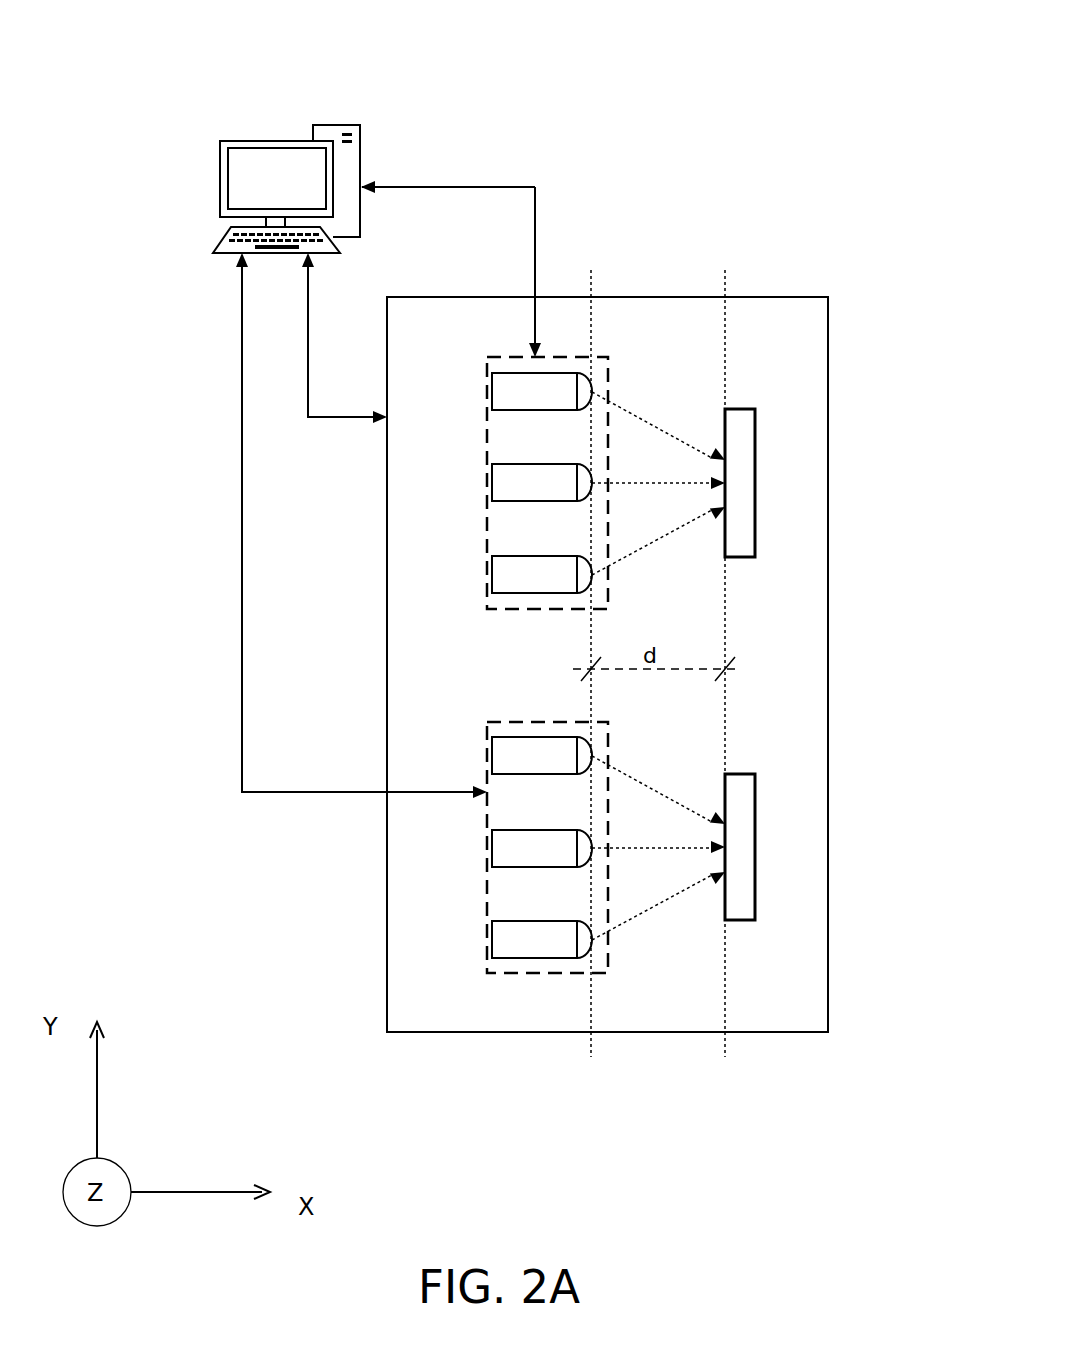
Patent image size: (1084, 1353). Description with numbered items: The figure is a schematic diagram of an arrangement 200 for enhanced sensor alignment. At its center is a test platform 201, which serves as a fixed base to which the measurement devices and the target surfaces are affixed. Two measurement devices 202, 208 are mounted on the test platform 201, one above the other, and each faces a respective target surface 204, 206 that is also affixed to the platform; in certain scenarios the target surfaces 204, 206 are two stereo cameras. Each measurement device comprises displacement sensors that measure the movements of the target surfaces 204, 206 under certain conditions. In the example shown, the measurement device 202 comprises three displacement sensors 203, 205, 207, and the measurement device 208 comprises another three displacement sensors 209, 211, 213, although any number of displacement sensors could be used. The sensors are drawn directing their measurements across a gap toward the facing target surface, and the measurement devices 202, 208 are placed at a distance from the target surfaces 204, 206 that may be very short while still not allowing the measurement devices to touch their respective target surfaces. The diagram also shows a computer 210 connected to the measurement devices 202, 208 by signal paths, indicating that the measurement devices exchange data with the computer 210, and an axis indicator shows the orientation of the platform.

The optical sensing system 200 is at (880, 20).
The test platform 201 is at (792, 297).
The measurement device 202 is at (608, 357).
The displacement sensor 203 is at (488, 384).
The target surface 204 is at (755, 409).
The displacement sensor 205 is at (488, 476).
The target surface 206 is at (755, 774).
The displacement sensor 207 is at (488, 569).
The measurement device 208 is at (608, 722).
The displacement sensor 209 is at (488, 751).
The computer 210 is at (222, 175).
The displacement sensor 211 is at (488, 844).
The displacement sensor 213 is at (488, 936).